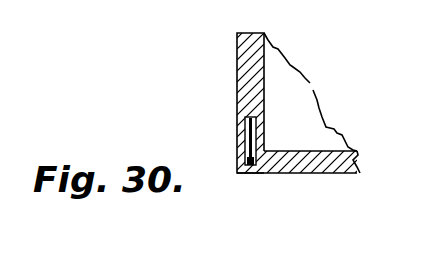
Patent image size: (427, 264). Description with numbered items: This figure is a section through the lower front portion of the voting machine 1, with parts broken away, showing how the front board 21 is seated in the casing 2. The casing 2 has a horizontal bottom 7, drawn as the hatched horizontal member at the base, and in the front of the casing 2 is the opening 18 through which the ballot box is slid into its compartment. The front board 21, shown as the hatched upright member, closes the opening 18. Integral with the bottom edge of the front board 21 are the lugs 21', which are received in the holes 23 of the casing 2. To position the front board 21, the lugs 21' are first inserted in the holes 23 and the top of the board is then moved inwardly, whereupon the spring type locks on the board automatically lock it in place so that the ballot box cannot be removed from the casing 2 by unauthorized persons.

The voting machine 1 is at (238, 37).
The front board 21 is at (203, 92).
The lugs 21' is at (203, 125).
The opening 18 is at (247, 160).
The holes 23 is at (262, 175).
The horizontal bottom 7 is at (312, 175).
The casing 2 is at (350, 175).